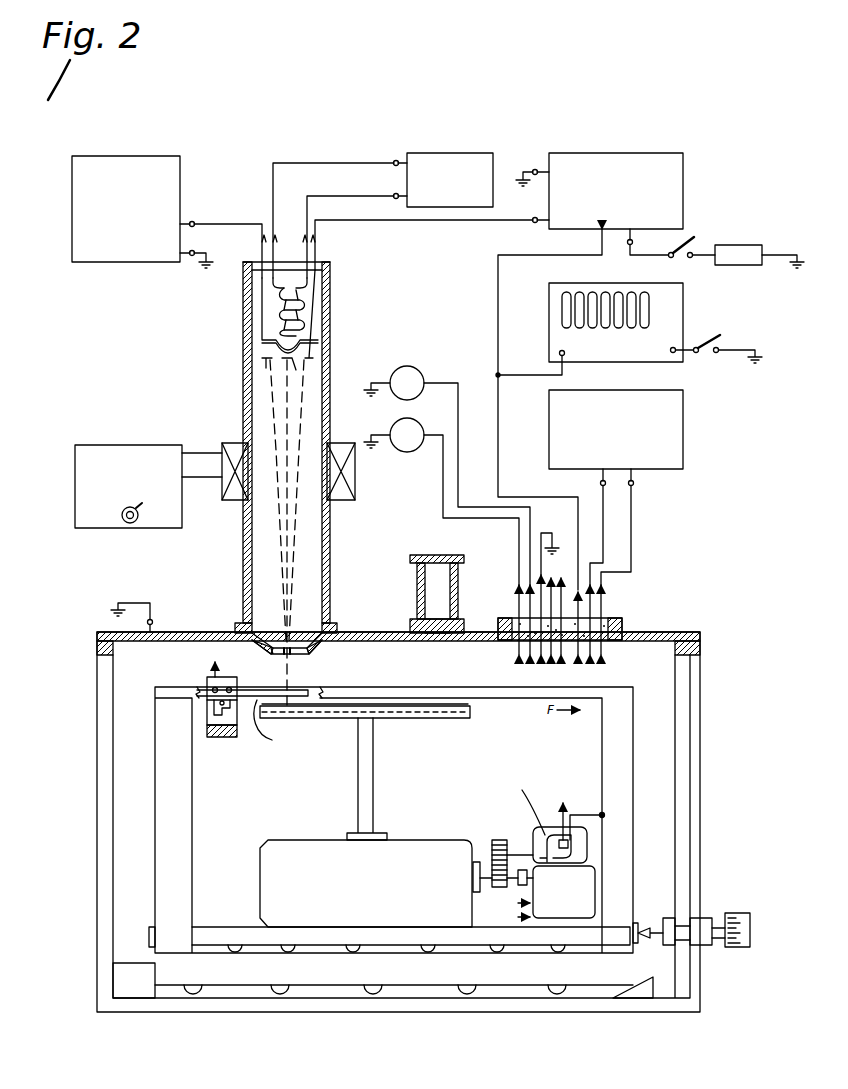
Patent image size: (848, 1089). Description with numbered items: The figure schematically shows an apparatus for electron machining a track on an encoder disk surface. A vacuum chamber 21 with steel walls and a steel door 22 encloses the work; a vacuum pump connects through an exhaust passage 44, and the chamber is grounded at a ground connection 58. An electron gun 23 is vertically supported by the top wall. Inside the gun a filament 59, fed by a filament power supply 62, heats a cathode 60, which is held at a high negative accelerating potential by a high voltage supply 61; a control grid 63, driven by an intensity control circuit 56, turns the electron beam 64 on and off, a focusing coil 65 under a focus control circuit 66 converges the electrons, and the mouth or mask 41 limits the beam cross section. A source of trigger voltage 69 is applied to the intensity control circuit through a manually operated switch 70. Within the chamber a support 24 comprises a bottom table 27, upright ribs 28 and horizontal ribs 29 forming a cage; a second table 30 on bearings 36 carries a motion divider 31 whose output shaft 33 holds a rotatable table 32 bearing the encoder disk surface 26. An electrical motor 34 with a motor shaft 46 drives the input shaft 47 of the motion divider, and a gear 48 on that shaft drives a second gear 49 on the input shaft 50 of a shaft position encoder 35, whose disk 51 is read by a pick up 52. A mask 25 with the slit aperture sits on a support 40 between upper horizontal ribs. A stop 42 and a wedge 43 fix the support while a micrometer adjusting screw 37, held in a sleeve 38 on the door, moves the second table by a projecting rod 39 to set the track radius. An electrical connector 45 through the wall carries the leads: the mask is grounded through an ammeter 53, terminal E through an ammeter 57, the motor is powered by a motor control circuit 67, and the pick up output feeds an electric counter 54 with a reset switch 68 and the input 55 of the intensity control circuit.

The vacuum chamber 21 is at (540, 756).
The steel door 22 is at (700, 692).
The electron gun 23 is at (240, 380).
The support 24 is at (235, 800).
The mask 25 is at (277, 727).
The encoder disk surface 26 is at (432, 705).
The bottom table 27 is at (400, 972).
The upright ribs 28 is at (625, 720).
The horizontal ribs 29 is at (372, 686).
The second table 30 is at (215, 930).
The motion divider 31 is at (411, 830).
The rotatable table 32 is at (440, 718).
The output shaft 33 is at (358, 775).
The electrical motor 34 is at (578, 890).
The shaft position encoder 35 is at (525, 800).
The bearings 36 is at (292, 990).
The micrometer adjusting screw 37 is at (738, 908).
The sleeve 38 is at (705, 945).
The projecting rod 39 is at (652, 925).
The support 40 is at (207, 680).
The mouth or mask 41 is at (278, 655).
The stop 42 is at (138, 985).
The wedge 43 is at (645, 985).
The exhaust passage 44 is at (440, 578).
The electrical connector 45 is at (620, 602).
The motor shaft 46 is at (525, 885).
The input shaft 47 is at (478, 872).
The gear 48 is at (518, 883).
The second gear 49 is at (498, 840).
The input shaft 50 is at (543, 824).
The disk 51 is at (550, 850).
The pick up 52 is at (568, 844).
The ammeter 53 is at (392, 423).
The electric counter 54 is at (683, 295).
The input 55 is at (590, 246).
The intensity control circuit 56 is at (683, 183).
The ammeter 57 is at (416, 367).
The ground connection 58 is at (160, 630).
The filament 59 is at (300, 298).
The cathode 60 is at (260, 345).
The high voltage supply 61 is at (180, 200).
The filament power supply 62 is at (488, 153).
The control grid 63 is at (268, 362).
The electron beam 64 is at (300, 540).
The focusing coil 65 is at (235, 500).
The focus control circuit 66 is at (140, 445).
The motor control circuit 67 is at (683, 420).
The reset switch 68 is at (700, 354).
The source of trigger voltage 69 is at (738, 245).
The switch 70 is at (672, 258).